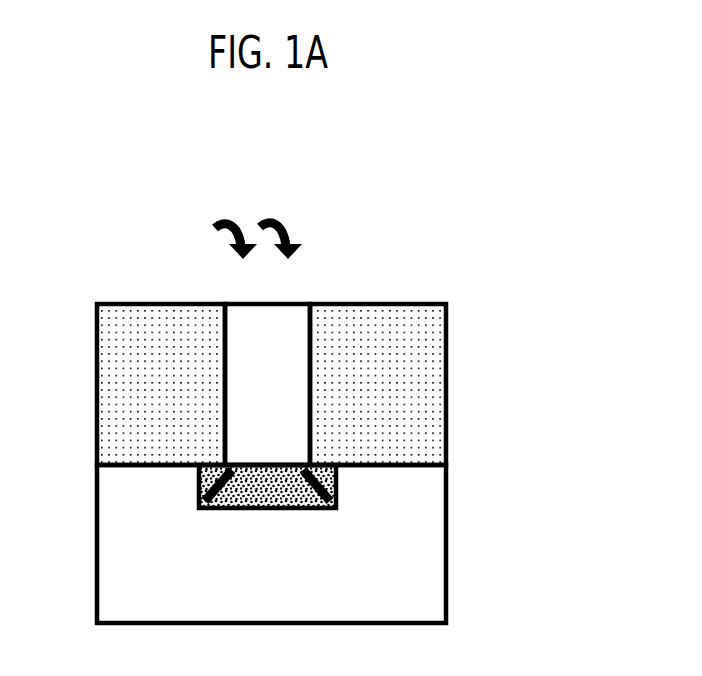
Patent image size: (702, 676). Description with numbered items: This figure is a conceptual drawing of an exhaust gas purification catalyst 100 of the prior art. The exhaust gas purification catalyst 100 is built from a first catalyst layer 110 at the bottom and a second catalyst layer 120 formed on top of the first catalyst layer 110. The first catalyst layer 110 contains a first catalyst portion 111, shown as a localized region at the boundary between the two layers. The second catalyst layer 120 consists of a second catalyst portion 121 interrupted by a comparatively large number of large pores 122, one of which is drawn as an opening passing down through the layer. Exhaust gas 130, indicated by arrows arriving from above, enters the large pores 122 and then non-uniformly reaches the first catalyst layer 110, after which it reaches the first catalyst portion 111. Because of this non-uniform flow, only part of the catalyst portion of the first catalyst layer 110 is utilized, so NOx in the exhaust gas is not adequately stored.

The exhaust gas purification catalyst 100 is at (302, 375).
The first catalyst layer 110 is at (453, 468).
The first catalyst portion 111 is at (92, 465).
The second catalyst layer 120 is at (310, 357).
The second catalyst portion 121 is at (223, 293).
The large pores 122 is at (229, 293).
The exhaust gas 130 is at (272, 221).